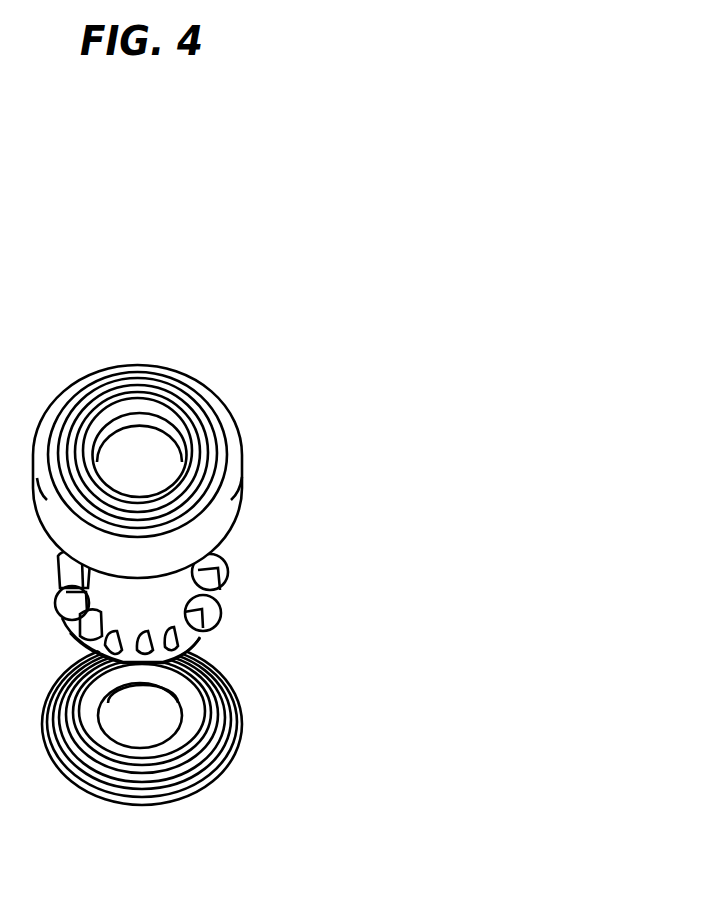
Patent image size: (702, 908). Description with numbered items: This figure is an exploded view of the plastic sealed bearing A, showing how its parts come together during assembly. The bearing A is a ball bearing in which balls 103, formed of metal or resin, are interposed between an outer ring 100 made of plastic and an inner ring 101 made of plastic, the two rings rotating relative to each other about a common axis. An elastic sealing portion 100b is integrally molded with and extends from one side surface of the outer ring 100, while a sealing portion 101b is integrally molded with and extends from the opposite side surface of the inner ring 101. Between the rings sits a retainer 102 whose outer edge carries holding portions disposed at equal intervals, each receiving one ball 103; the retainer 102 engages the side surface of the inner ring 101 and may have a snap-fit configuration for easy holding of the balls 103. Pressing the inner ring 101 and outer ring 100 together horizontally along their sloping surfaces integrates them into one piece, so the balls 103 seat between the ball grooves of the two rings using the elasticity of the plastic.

The bearing A is at (79, 334).
The outer ring 100 is at (186, 417).
The elastic sealing portion 100b is at (157, 369).
The inner ring 101 is at (189, 763).
The sealing portion 101b is at (177, 768).
The retainer 102 is at (193, 640).
The ball 103 is at (227, 560).